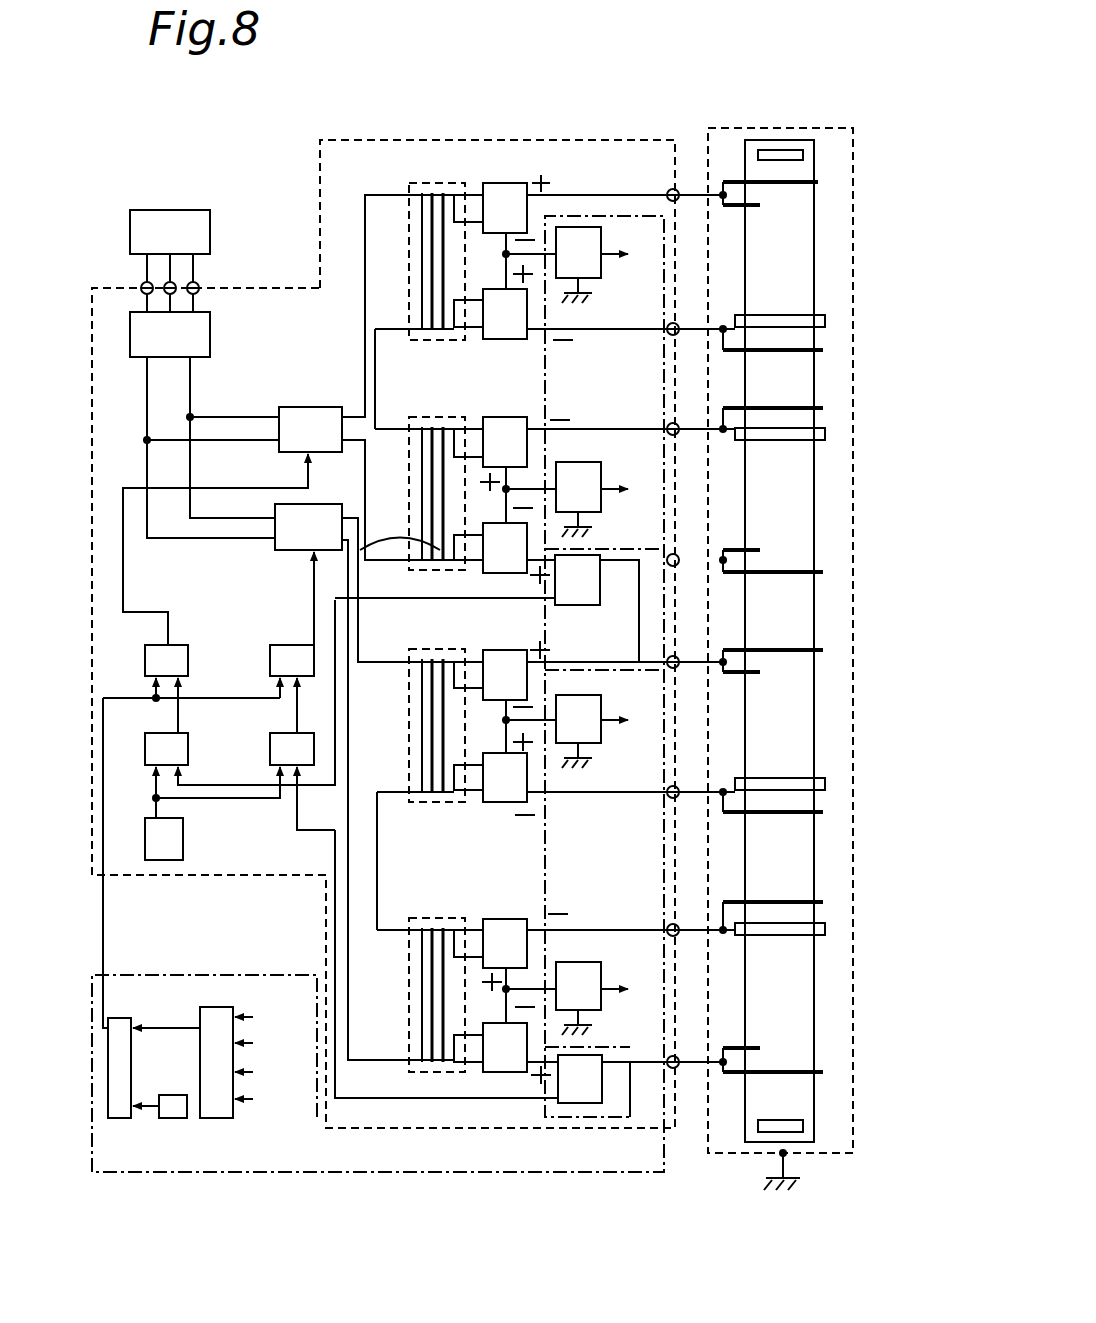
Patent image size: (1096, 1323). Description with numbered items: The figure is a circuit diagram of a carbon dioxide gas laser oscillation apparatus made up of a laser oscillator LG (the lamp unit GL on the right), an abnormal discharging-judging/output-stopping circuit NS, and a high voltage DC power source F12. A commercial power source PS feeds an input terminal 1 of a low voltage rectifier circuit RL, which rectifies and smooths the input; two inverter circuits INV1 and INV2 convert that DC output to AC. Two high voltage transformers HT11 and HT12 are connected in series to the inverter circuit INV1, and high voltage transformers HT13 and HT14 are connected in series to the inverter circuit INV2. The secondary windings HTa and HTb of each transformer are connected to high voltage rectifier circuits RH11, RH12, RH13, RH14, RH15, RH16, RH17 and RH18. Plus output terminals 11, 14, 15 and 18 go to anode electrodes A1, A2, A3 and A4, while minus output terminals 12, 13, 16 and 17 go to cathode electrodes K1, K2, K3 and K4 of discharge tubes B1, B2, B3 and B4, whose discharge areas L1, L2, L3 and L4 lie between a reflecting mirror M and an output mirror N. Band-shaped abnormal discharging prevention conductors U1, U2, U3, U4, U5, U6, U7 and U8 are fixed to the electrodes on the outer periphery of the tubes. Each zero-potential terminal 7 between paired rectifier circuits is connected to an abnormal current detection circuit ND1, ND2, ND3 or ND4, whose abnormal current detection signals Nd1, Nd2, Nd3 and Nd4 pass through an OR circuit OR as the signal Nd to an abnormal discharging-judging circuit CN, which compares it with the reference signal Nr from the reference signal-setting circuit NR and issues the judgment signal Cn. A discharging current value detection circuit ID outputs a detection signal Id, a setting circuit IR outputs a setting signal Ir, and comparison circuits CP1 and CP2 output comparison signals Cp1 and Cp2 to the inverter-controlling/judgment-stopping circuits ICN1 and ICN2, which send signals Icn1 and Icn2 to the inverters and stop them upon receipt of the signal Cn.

The high voltage DC power source F12 is at (515, 140).
The commercial power source PS is at (172, 210).
The input terminal 1 is at (200, 288).
The low voltage rectifier circuit RL is at (210, 335).
The inverter circuit INV1 is at (308, 407).
The inverter circuit INV2 is at (275, 550).
The inverter-controlling/judgment-stopping circuit ICN1 is at (170, 645).
The inverter-controlling/judgment-stopping circuit ICN2 is at (278, 645).
The inverter-controlling/judgment-stopping signal Icn1 is at (125, 580).
The inverter-controlling/judgment-stopping signal Icn2 is at (314, 570).
The discharging current value comparison circuit CP1 is at (188, 745).
The discharging current value comparison circuit CP2 is at (270, 770).
The discharging current value comparison signal Cp1 is at (180, 700).
The discharging current value comparison signal Cp2 is at (297, 708).
The discharging current value setting signal Ir is at (154, 792).
The discharging current value detection signal Id is at (236, 786).
The discharging current value setting circuit IR is at (184, 850).
The abnormal discharging judgment signal Cn is at (103, 921).
The abnormal discharging-judging/output-stopping circuit NS is at (372, 1174).
The abnormal discharging-judging circuit CN is at (120, 1118).
The abnormal discharging judgment reference signal-setting circuit NR is at (172, 1118).
The OR circuit OR is at (215, 1118).
The abnormal current detection signal Nd is at (152, 1026).
The abnormal discharging judgment reference signal Nr is at (150, 1104).
The abnormal current detection signal Nd1 is at (446, 642).
The abnormal current detection signal Nd2 is at (445, 773).
The abnormal current detection signal Nd3 is at (445, 903).
The abnormal current detection signal Nd4 is at (445, 1051).
The high voltage transformer HT11 is at (432, 172).
The high voltage transformer HT12 is at (415, 417).
The high voltage transformer HT13 is at (414, 648).
The high voltage transformer HT14 is at (415, 918).
The secondary winding HTa is at (462, 205).
The secondary winding HTb is at (462, 320).
The high voltage rectifier circuit RH11 is at (522, 195).
The high voltage rectifier circuit RH12 is at (522, 339).
The high voltage rectifier circuit RH13 is at (517, 430).
The high voltage rectifier circuit RH14 is at (442, 529).
The high voltage rectifier circuit RH15 is at (500, 650).
The high voltage rectifier circuit RH16 is at (510, 802).
The high voltage rectifier circuit RH17 is at (517, 930).
The high voltage rectifier circuit RH18 is at (512, 1072).
The zero-potential terminal 7 is at (506, 254).
The abnormal current detection circuit ND1 is at (580, 237).
The abnormal current detection circuit ND2 is at (580, 472).
The abnormal current detection circuit ND3 is at (590, 718).
The abnormal current detection circuit ND4 is at (580, 970).
The discharging current value detection circuit ID is at (580, 605).
The plus output terminal 11 is at (676, 189).
The minus output terminal 12 is at (676, 323).
The minus output terminal 13 is at (676, 423).
The plus output terminal 14 is at (676, 554).
The plus output terminal 15 is at (676, 656).
The minus output terminal 16 is at (676, 786).
The minus output terminal 17 is at (676, 924).
The output terminal 18 is at (676, 1056).
The laser oscillator GL is at (841, 1156).
The laser oscillator LG is at (730, 1158).
The reflecting mirror M is at (803, 153).
The output mirror N is at (803, 1131).
The discharge area L1 is at (781, 260).
The discharge area L2 is at (781, 495).
The discharge area L3 is at (781, 735).
The discharge area L4 is at (781, 1002).
The band-shaped conductor U1 is at (822, 180).
The band-shaped conductor U2 is at (824, 575).
The band-shaped conductor U3 is at (824, 353).
The band-shaped conductor U4 is at (824, 410).
The band-shaped conductor U5 is at (824, 650).
The band-shaped conductor U6 is at (824, 1075).
The band-shaped conductor U7 is at (824, 815).
The band-shaped conductor U8 is at (824, 902).
The anode electrode A1 is at (764, 206).
The anode electrode A2 is at (764, 549).
The anode electrode A3 is at (764, 674).
The anode electrode A4 is at (764, 1047).
The discharge tube B1 is at (814, 272).
The discharge tube B2 is at (814, 483).
The discharge tube B3 is at (814, 735).
The discharge tube B4 is at (814, 977).
The cathode electrode K1 is at (825, 321).
The cathode electrode K2 is at (825, 434).
The cathode electrode K3 is at (825, 784).
The cathode electrode K4 is at (825, 930).